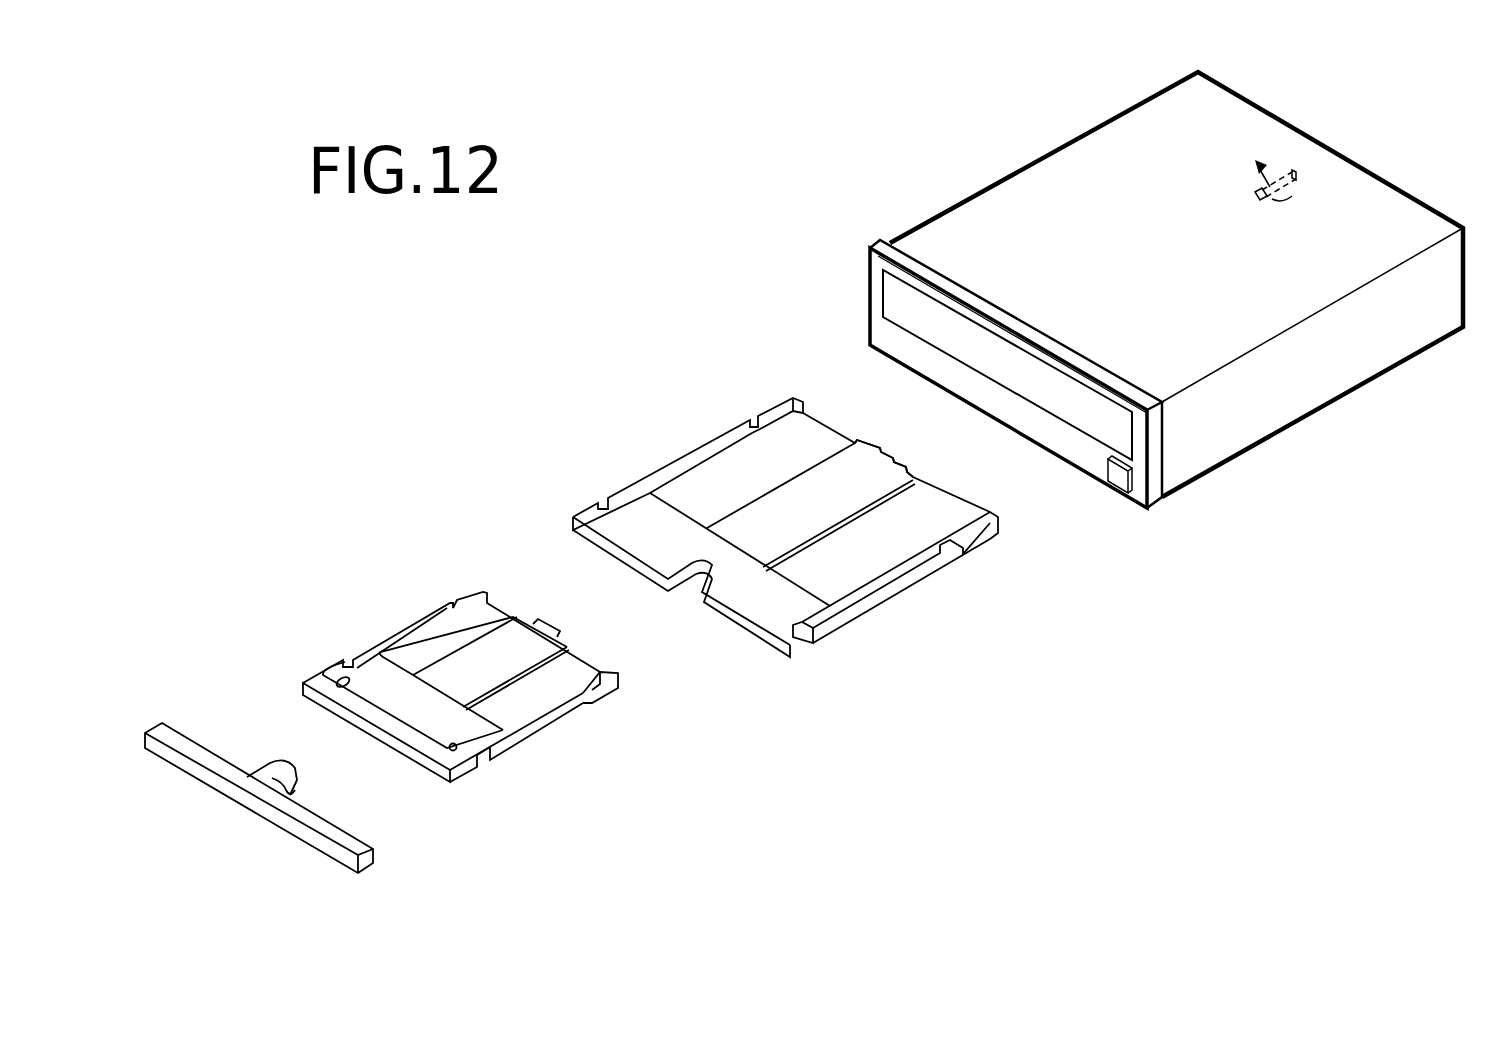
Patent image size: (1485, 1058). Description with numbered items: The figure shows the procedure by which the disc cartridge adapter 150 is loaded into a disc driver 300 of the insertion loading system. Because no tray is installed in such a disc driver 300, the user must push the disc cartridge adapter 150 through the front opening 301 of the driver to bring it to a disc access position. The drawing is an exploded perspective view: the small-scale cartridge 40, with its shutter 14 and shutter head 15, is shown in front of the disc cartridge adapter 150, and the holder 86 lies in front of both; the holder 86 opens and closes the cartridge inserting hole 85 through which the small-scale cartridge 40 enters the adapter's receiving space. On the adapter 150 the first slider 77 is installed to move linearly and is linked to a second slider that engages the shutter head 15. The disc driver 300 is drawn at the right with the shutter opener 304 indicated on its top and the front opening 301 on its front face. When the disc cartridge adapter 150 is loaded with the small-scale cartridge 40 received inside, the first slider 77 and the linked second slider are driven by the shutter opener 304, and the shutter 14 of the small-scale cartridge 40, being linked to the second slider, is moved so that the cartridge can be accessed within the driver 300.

The optical disc drive housing 300 is at (1337, 355).
The front bezel 301 is at (1073, 405).
The shutter opener 304 is at (1290, 163).
The disc cartridge adapter 150 is at (785, 507).
The first slider 77 is at (893, 460).
The cartridge inserting hole 85 is at (743, 627).
The small-scale cartridge 40 is at (460, 616).
The shutter 14 is at (460, 660).
The shutter head 15 is at (555, 634).
The holder 86 is at (180, 743).